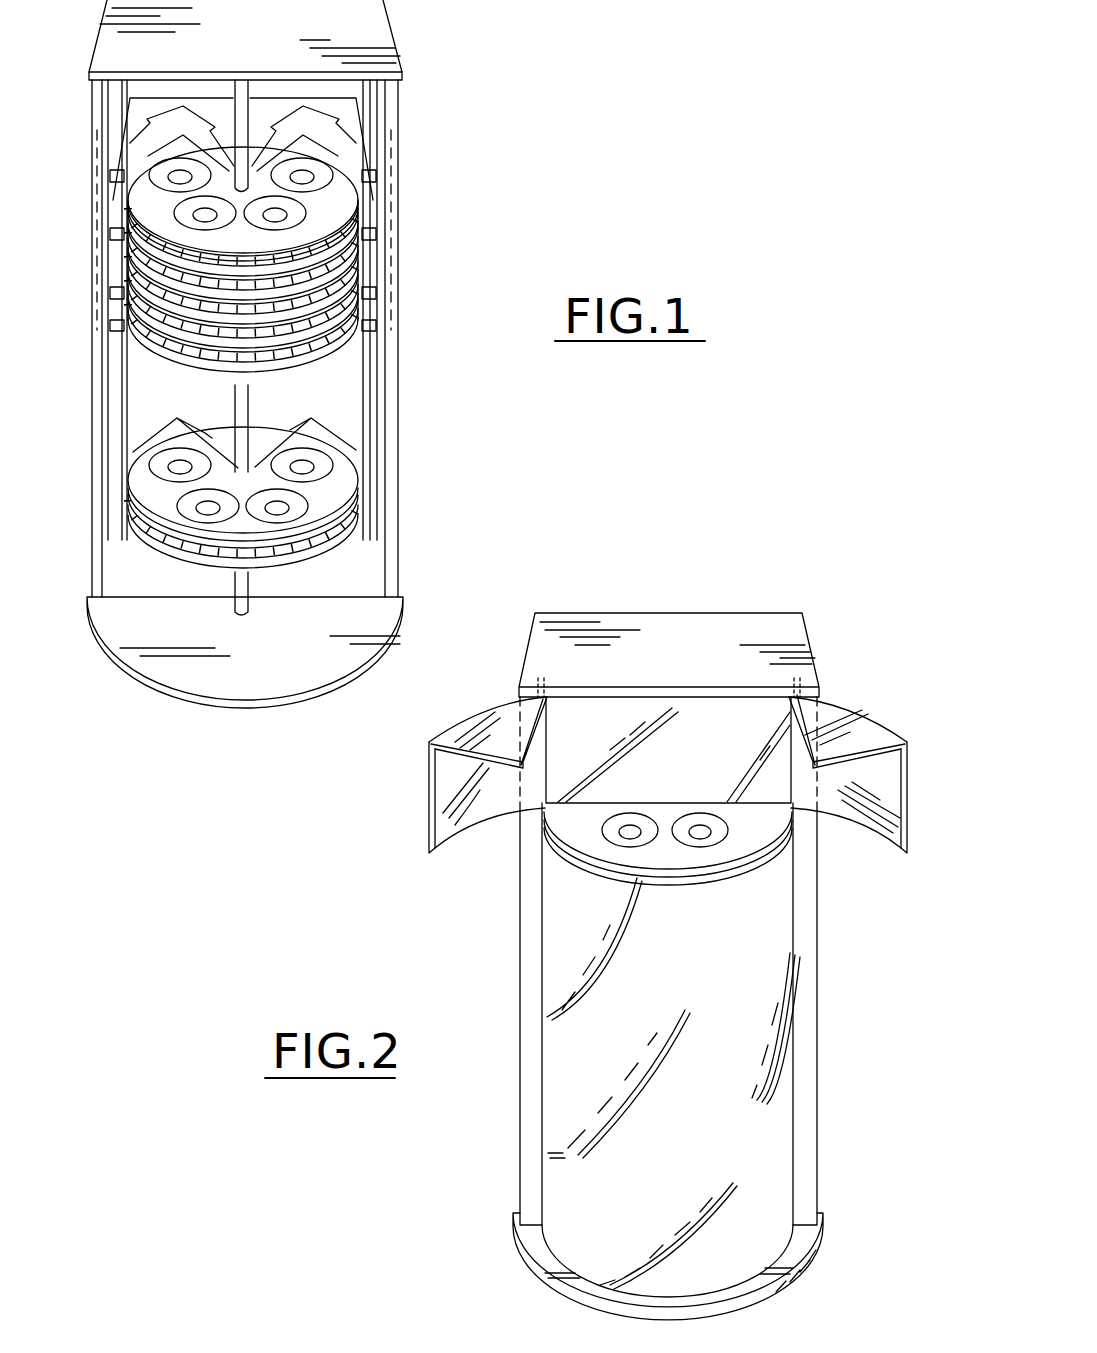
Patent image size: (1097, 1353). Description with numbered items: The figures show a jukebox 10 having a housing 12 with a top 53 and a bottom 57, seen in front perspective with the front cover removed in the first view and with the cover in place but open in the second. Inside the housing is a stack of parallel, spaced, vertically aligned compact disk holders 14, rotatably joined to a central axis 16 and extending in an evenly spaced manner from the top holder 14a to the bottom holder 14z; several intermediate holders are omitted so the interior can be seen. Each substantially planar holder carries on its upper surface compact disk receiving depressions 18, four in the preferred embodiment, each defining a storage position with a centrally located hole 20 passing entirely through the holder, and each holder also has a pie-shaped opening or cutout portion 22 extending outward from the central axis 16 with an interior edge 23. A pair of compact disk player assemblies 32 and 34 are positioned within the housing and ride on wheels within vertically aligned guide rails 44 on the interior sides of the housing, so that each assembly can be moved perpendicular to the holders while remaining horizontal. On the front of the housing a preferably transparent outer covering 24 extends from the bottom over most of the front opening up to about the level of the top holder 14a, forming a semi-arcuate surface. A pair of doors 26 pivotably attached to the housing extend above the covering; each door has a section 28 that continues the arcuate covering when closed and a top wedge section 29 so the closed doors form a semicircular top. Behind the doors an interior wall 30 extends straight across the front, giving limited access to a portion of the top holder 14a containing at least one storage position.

In FIG. 1, the jukebox 10 is at (441, 270).
In FIG. 1, the housing 12 is at (301, 40).
In FIG. 1, the compact disk holders 14 is at (127, 305).
In FIG. 1, the top holder 14a is at (253, 286).
In FIG. 2, the top holder 14a is at (753, 852).
In FIG. 1, the bottom holder 14z is at (199, 473).
In FIG. 1, the central axis 16 is at (248, 412).
In FIG. 1, the compact disk receiving depressions 18 is at (312, 176).
In FIG. 1, the centrally located hole 20 is at (340, 143).
In FIG. 1, the pie-shaped opening or cutout portion 22 is at (192, 421).
In FIG. 1, the interior edge 23 is at (182, 432).
In FIG. 2, the outer covering 24 is at (714, 1123).
In FIG. 2, the doors 26 is at (634, 761).
In FIG. 2, the section 28 is at (462, 820).
In FIG. 2, the top wedge section 29 is at (495, 713).
In FIG. 2, the interior wall 30 is at (730, 758).
In FIG. 1, the compact disk player assembly 32 is at (130, 135).
In FIG. 1, the compact disk player assembly 34 is at (253, 286).
In FIG. 1, the guide rails 44 is at (388, 353).
In FIG. 1, the top of the housing 53 is at (297, 33).
In FIG. 1, the bottom of the housing 57 is at (292, 647).